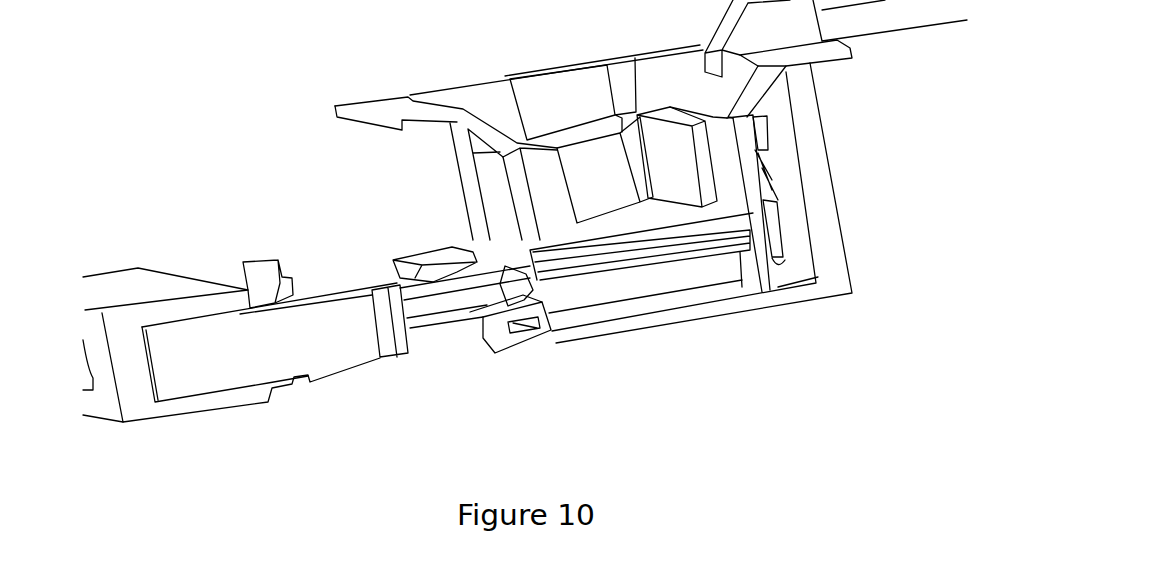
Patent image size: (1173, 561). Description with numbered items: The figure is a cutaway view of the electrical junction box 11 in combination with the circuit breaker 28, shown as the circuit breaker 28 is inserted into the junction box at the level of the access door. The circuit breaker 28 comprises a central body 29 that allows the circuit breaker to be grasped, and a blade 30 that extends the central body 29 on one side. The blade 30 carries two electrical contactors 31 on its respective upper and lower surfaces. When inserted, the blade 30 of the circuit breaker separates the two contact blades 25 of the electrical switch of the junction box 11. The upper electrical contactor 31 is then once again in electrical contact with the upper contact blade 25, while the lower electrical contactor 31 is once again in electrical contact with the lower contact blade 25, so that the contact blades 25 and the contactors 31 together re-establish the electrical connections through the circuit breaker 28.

The connector housing 11 is at (651, 171).
The contact blade 25 is at (602, 275).
The circuit breaker 28 is at (148, 248).
The central body 29 is at (185, 408).
The blade 30 is at (487, 320).
The electrical contactor 31 is at (400, 286).